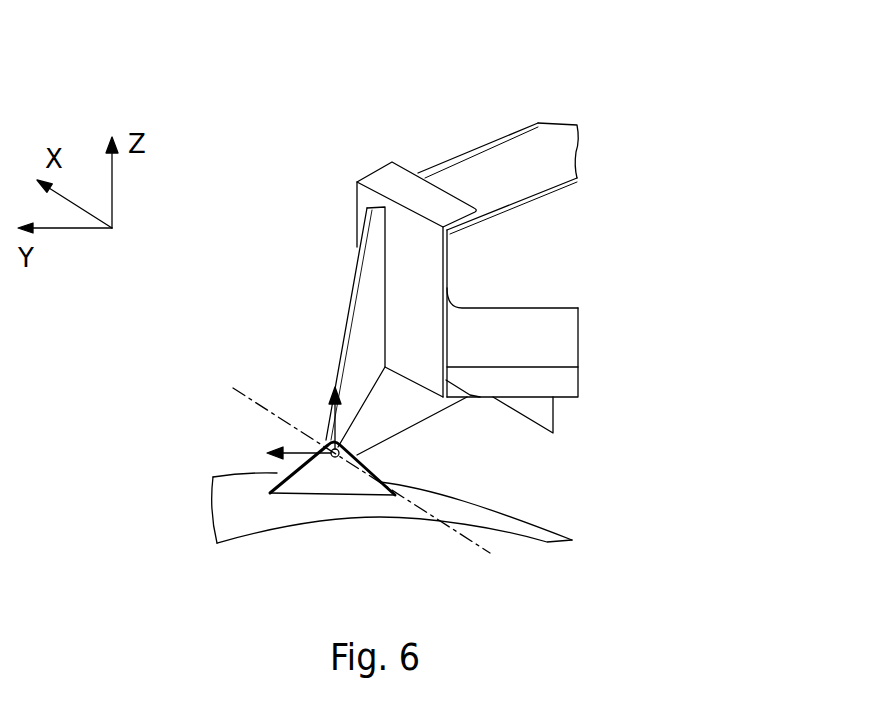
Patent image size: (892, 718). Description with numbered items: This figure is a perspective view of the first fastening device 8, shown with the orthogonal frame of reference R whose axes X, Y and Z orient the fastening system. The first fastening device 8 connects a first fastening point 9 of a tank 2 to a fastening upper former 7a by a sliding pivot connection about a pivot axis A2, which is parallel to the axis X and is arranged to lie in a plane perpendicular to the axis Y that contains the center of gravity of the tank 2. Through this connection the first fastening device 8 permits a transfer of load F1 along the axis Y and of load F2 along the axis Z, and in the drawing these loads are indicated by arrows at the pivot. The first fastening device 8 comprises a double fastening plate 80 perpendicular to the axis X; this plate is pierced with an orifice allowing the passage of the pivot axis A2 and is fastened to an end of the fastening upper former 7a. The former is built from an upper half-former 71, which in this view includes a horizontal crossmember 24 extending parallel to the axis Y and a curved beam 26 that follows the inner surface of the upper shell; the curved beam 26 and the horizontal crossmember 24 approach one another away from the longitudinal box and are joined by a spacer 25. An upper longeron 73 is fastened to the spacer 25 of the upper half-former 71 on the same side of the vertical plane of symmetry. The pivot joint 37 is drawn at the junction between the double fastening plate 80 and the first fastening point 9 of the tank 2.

The tank 2 is at (243, 510).
The fastening upper former 7a is at (622, 126).
The first fastening device 8 is at (305, 188).
The first fastening point 9 is at (325, 495).
The horizontal crossmember 24 is at (543, 338).
The spacer 25 is at (447, 290).
The curved beam 26 is at (467, 187).
The pivot joint 37 is at (280, 467).
The upper half-former 71 is at (503, 126).
The upper longeron 73 is at (392, 187).
The double fastening plate 80 is at (353, 300).
The pivot axis A2 is at (278, 417).
The load F1 is at (305, 453).
The load F2 is at (337, 423).
The orthogonal frame of reference R is at (116, 256).